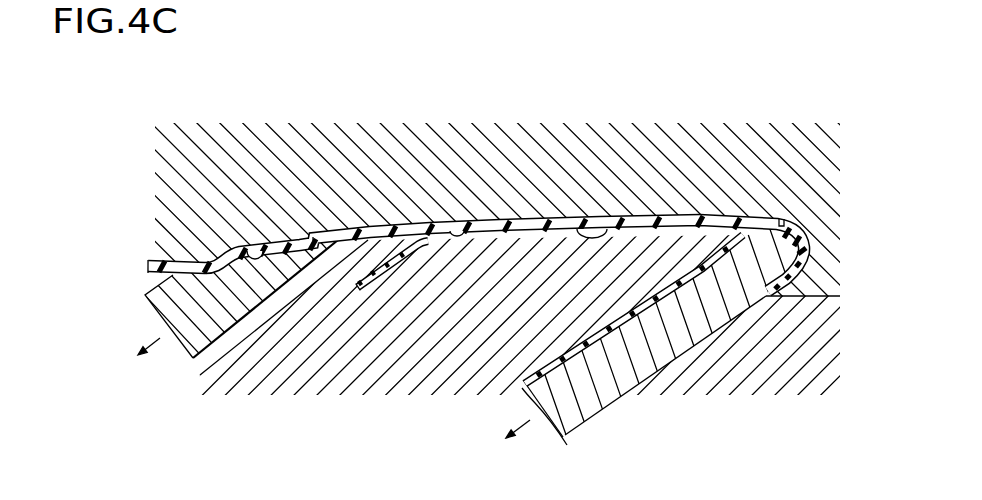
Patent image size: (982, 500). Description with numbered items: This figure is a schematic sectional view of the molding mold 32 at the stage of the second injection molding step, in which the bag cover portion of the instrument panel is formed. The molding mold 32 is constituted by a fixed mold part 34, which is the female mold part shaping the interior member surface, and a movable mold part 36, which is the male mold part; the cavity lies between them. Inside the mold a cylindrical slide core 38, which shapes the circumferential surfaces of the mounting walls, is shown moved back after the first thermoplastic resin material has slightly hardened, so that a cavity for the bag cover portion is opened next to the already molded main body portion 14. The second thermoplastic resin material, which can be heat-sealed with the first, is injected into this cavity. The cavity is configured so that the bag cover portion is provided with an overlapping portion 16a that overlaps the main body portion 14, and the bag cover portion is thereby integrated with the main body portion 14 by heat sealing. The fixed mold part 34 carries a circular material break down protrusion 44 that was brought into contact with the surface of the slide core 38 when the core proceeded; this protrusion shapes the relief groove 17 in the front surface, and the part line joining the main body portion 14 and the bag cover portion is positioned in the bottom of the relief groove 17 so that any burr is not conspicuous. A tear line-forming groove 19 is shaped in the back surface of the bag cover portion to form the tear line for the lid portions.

The molding mold 32 is at (112, 90).
The fixed mold part 34 is at (195, 175).
The movable mold part 36 is at (152, 280).
The slide core 38 is at (230, 320).
The main body portion 14 is at (543, 228).
The overlapping portion 16a is at (275, 232).
The material break down protrusion 44 is at (310, 238).
The tear line-forming groove 19 is at (607, 227).
The relief groove 17 is at (781, 223).